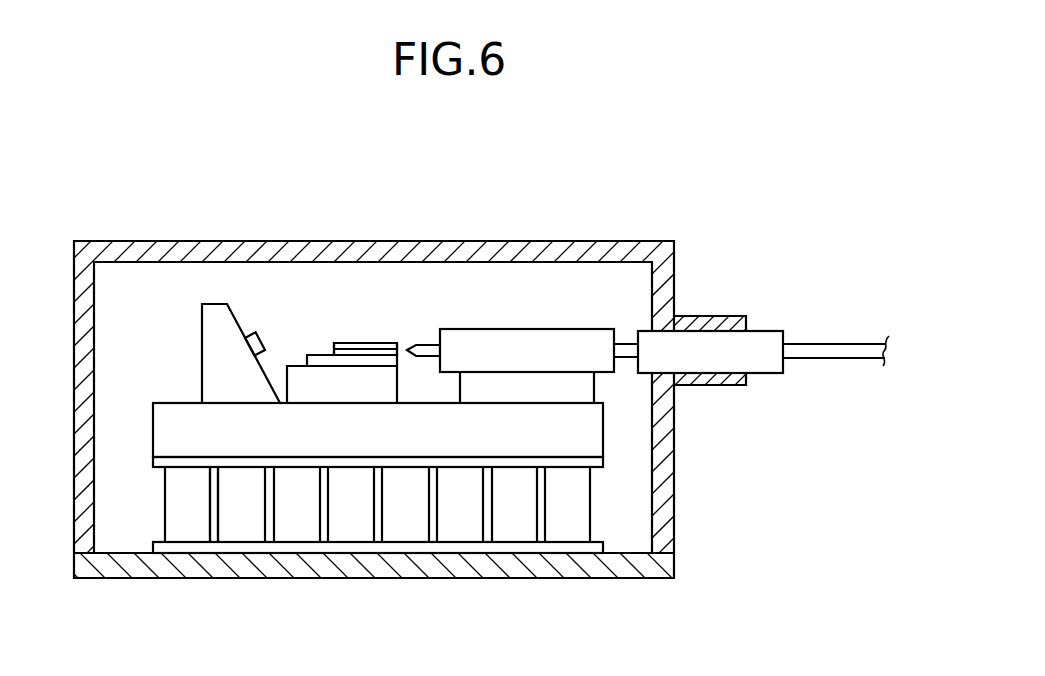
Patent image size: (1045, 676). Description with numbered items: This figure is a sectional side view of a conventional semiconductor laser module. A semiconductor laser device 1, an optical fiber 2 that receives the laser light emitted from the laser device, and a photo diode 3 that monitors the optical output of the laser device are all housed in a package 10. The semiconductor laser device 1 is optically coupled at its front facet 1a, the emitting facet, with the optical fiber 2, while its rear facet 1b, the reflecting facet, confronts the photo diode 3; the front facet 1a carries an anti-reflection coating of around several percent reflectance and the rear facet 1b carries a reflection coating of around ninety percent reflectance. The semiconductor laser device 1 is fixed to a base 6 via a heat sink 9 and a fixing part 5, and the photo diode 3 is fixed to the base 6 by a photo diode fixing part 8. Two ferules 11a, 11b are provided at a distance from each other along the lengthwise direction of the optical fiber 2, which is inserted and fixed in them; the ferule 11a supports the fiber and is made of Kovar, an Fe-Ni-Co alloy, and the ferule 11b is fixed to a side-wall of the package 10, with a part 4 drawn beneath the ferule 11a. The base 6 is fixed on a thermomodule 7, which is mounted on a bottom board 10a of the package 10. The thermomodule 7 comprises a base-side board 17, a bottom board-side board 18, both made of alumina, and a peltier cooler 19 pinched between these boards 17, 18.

The package 10 is at (578, 240).
The bottom board 10a is at (418, 579).
The semiconductor laser device 1 is at (355, 343).
The front facet 1a is at (404, 342).
The rear facet 1b is at (331, 350).
The optical fiber 2 is at (628, 348).
The photo diode 3 is at (256, 331).
The fiber holder base 4 is at (477, 393).
The fixing part 5 is at (295, 387).
The base 6 is at (162, 424).
The thermomodule 7 is at (173, 513).
The photo diode fixing part 8 is at (208, 329).
The heat sink 9 is at (308, 353).
The ferule 11a is at (517, 337).
The ferule 11b is at (760, 343).
The base-side board 17 is at (163, 460).
The bottom board-side board 18 is at (163, 543).
The peltier cooler 19 is at (182, 488).